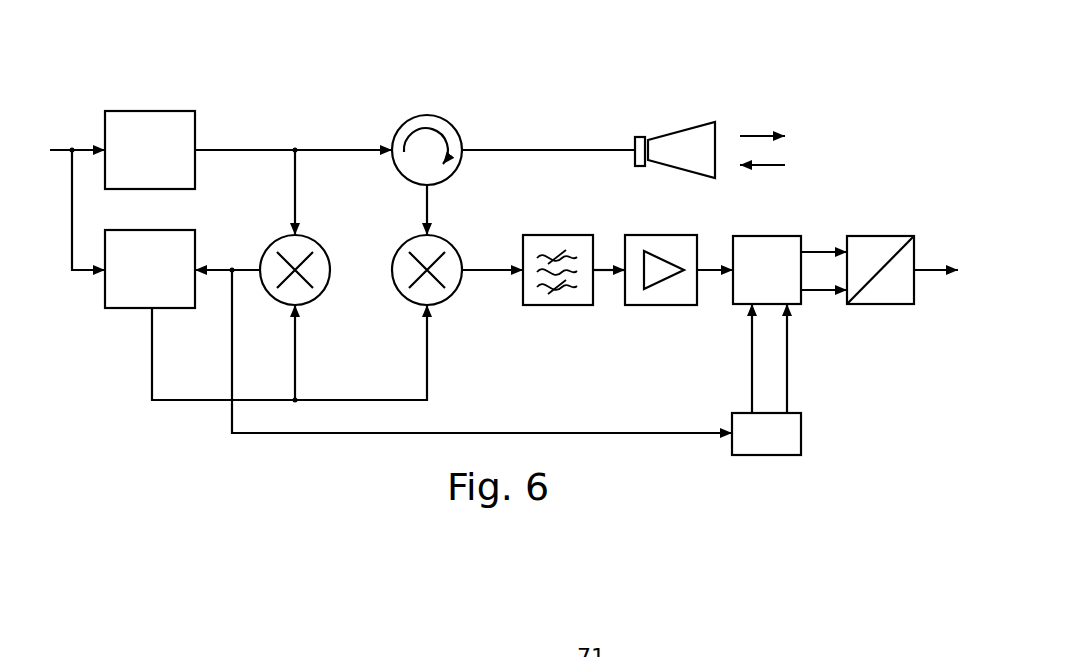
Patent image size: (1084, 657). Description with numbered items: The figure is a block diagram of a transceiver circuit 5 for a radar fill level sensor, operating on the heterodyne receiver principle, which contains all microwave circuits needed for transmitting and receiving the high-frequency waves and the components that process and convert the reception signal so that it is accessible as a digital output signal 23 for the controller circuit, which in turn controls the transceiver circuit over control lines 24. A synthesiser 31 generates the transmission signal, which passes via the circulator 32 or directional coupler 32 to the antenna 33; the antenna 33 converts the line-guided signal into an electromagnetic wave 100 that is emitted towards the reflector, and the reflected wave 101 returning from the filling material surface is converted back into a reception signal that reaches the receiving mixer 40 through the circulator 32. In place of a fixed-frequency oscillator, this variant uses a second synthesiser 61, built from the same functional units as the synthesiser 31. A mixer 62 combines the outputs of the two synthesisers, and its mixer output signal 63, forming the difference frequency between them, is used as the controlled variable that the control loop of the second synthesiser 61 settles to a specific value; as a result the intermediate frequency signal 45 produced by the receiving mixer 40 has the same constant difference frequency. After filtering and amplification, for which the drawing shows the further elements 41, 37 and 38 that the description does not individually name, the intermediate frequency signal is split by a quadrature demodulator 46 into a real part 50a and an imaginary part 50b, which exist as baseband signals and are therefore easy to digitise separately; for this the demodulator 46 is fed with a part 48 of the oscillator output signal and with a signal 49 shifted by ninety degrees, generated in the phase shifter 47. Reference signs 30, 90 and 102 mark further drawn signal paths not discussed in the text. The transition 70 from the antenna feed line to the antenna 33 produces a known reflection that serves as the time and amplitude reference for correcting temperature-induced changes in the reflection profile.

The transceiver circuit 5 is at (368, 76).
The output signal 23 is at (925, 265).
The control lines 24 is at (62, 148).
The transmit signal 30 is at (235, 148).
The synthesiser 31 is at (142, 110).
The circulator or directional coupler 32 is at (420, 116).
The antenna 33 is at (672, 135).
The amplifier 37 is at (640, 308).
The analog-to-digital converter 38 is at (878, 235).
The receiving mixer 40 is at (406, 240).
The filter 41 is at (560, 234).
The intermediate frequency signal 45 is at (500, 275).
The quadrature demodulator 46 is at (743, 235).
The phase shifter 47 is at (801, 425).
The part of the output signal 48 is at (752, 340).
The phase-shifted signal 49 is at (787, 357).
The real part 50a is at (820, 248).
The imaginary part 50b is at (820, 295).
The second synthesiser 61 is at (125, 310).
The mixer 62 is at (302, 310).
The mixer output signal 63 is at (245, 268).
The transition from the antenna feed line to the antenna 70 is at (632, 143).
The branch point 90 is at (295, 148).
The electromagnetic wave 100 is at (757, 133).
The reflected wave 101 is at (762, 168).
The local oscillator signal 102 is at (430, 357).